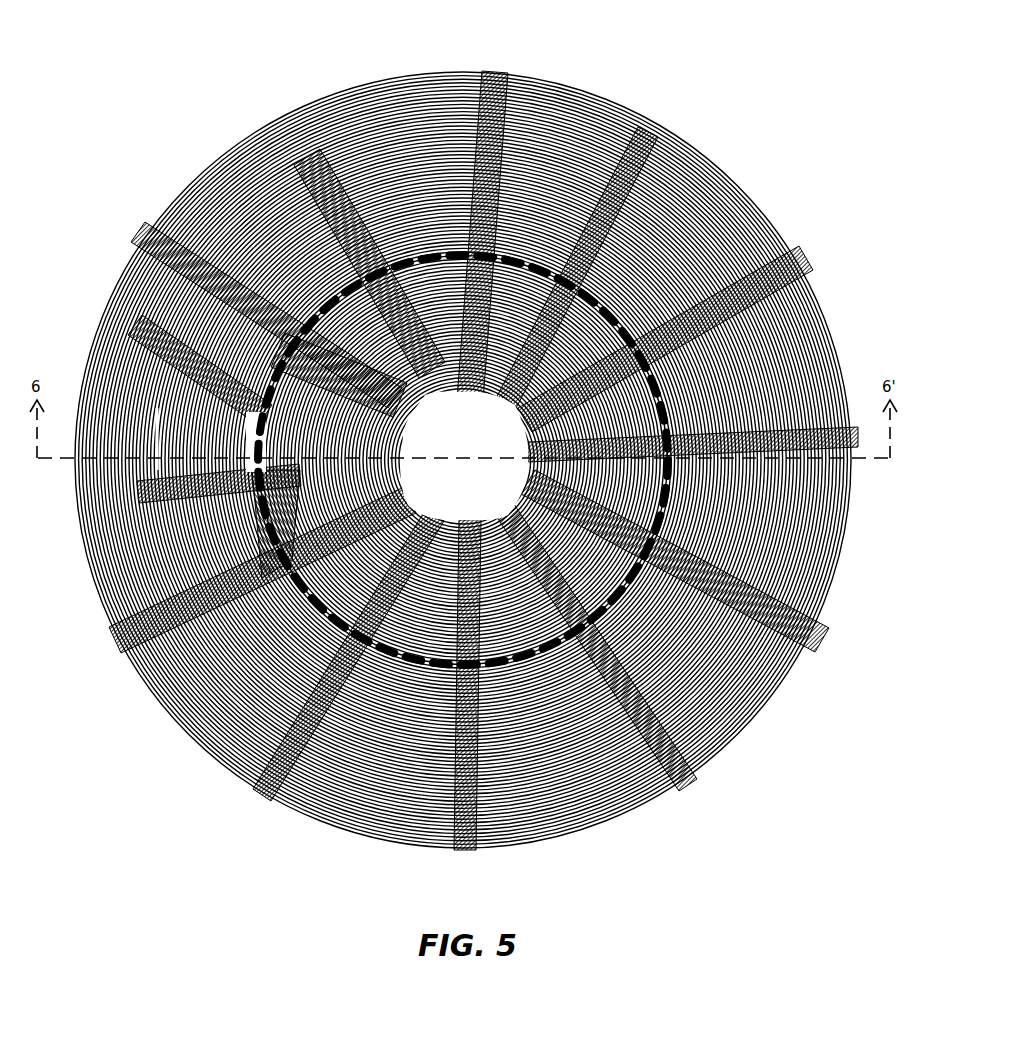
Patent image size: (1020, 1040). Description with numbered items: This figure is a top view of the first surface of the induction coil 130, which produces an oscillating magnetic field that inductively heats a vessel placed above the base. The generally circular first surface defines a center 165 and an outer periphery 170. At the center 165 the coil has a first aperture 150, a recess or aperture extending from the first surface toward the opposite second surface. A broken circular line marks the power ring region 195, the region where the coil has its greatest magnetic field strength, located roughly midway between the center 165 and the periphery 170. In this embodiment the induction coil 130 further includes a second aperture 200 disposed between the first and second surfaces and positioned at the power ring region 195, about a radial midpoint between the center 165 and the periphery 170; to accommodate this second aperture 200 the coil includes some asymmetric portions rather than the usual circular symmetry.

The induction coil 130 is at (441, 438).
The first aperture 150 is at (520, 410).
The center 165 is at (462, 470).
The periphery 170 is at (462, 60).
The power ring region 195 is at (305, 615).
The second aperture 200 is at (236, 437).